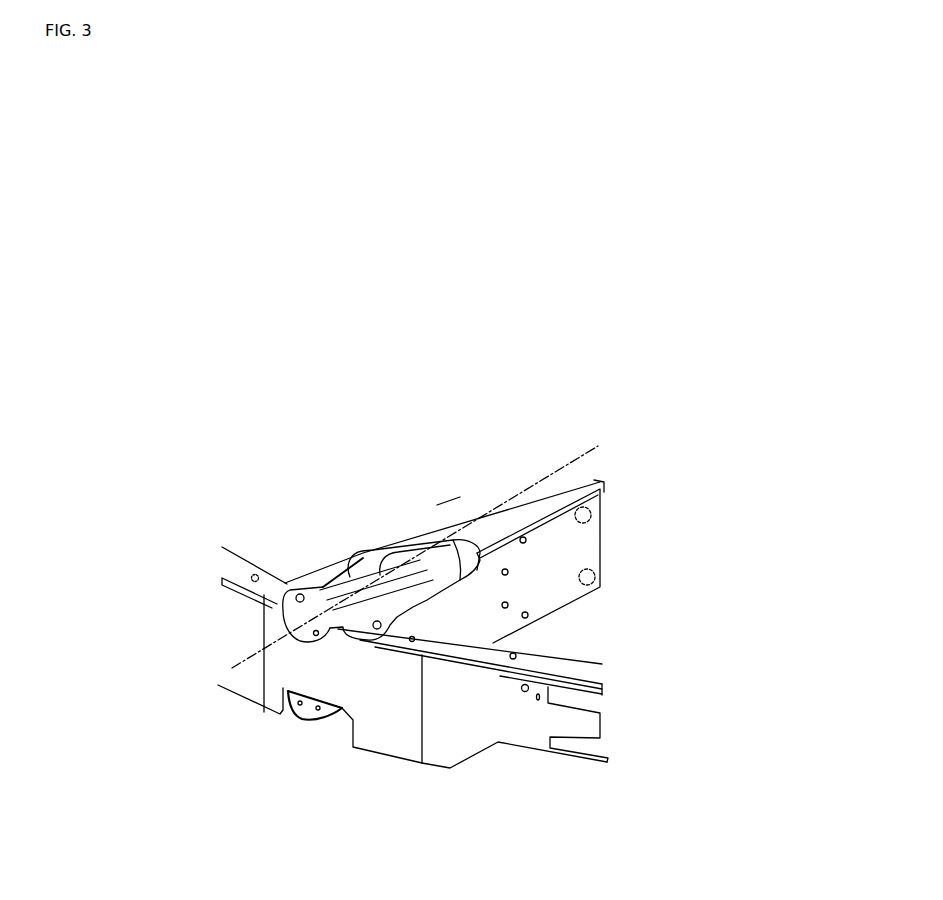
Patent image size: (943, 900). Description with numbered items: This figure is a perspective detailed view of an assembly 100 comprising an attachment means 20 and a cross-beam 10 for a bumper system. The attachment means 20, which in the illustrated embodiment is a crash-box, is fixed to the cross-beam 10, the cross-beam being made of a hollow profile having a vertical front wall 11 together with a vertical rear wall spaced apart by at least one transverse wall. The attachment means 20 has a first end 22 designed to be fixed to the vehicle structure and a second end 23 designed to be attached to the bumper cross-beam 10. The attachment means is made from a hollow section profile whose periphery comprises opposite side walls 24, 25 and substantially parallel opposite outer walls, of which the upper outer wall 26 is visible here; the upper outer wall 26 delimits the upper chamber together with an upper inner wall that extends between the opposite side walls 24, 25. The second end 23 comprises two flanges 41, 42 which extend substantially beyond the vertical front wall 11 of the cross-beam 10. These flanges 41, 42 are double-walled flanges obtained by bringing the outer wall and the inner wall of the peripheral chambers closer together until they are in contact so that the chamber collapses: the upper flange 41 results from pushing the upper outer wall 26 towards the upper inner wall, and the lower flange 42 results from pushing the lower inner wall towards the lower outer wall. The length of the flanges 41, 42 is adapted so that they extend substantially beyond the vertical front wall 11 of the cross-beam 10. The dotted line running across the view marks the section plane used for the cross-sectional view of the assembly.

The connection structure 100 is at (373, 386).
The cross-beam 10 is at (232, 546).
The vertical front wall 11 is at (405, 708).
The attachment means 20 is at (622, 559).
The first end 22 is at (631, 476).
The second end 23 is at (293, 522).
The side wall 24 is at (552, 582).
The side wall 25 is at (437, 505).
The upper outer wall 26 is at (502, 480).
The flange 41 is at (222, 578).
The flange 42 is at (309, 720).